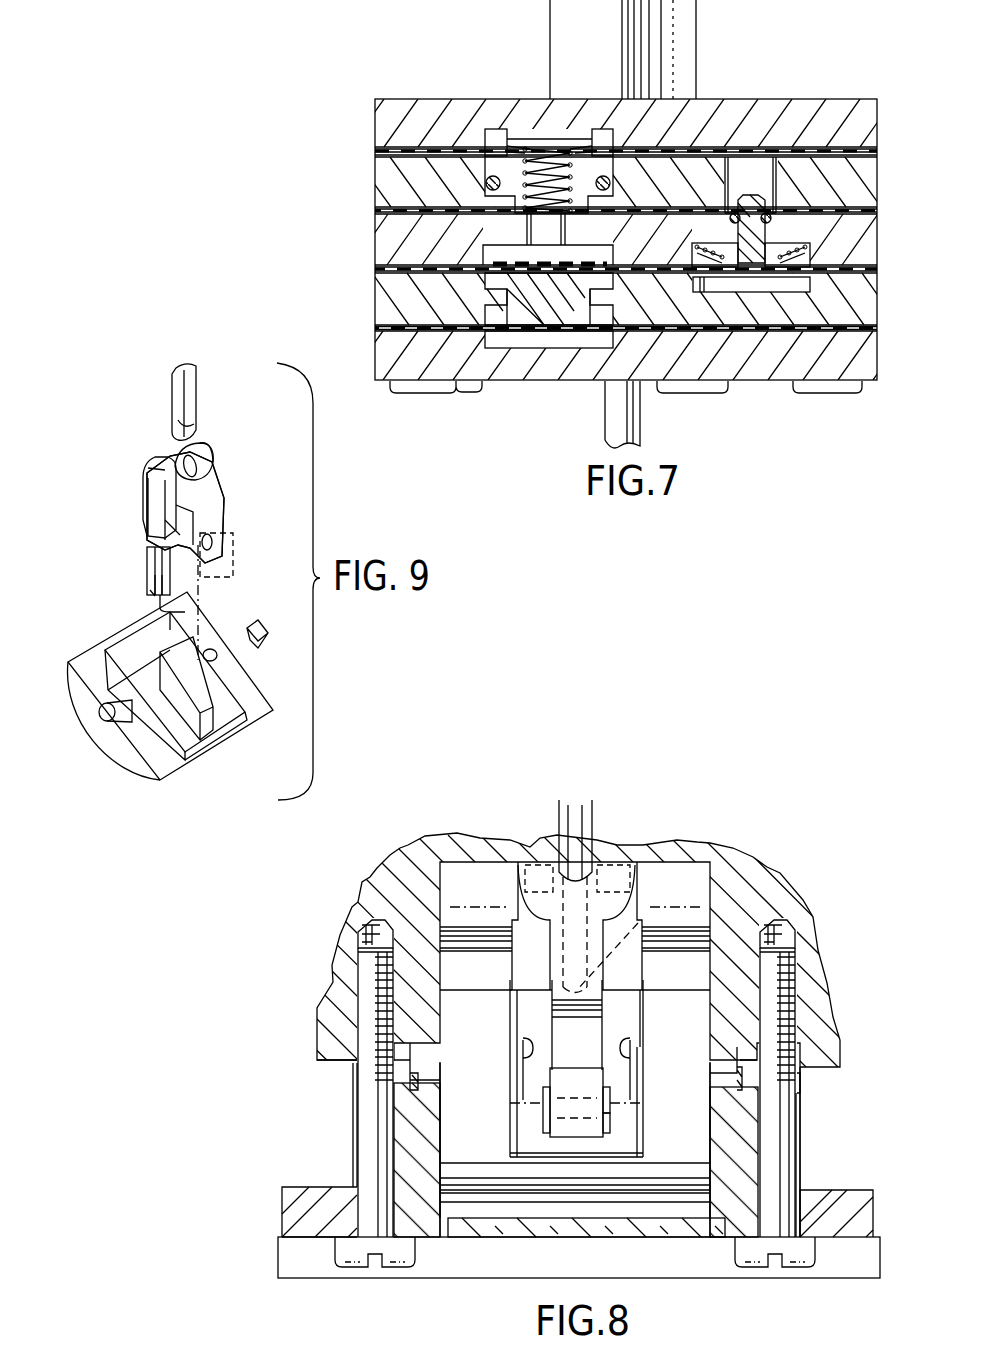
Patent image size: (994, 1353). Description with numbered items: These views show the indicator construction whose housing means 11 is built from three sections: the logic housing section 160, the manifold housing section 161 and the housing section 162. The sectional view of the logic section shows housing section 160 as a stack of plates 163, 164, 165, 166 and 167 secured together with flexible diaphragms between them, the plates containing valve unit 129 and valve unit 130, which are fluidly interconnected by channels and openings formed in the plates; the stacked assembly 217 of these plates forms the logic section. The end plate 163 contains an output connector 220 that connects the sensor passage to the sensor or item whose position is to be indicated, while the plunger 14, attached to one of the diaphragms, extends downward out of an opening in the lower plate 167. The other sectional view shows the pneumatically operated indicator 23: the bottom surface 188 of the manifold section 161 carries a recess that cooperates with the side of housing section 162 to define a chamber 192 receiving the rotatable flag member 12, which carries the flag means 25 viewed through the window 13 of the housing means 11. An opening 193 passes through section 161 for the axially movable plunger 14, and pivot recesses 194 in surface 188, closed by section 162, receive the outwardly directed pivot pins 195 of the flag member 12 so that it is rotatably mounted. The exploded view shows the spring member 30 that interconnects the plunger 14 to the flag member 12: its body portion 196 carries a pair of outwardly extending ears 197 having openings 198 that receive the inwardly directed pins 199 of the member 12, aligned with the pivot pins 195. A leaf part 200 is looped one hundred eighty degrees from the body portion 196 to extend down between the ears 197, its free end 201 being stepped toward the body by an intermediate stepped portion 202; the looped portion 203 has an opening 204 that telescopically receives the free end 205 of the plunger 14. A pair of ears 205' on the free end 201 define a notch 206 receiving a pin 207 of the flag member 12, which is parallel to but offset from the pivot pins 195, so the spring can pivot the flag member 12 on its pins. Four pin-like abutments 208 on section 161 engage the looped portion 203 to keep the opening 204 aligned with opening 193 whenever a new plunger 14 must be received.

In FIG. 8, the housing means 11 is at (785, 893).
In FIG. 9, the rotatable flag member 12 is at (130, 757).
In FIG. 8, the rotatable flag member 12 is at (455, 1128).
In FIG. 8, the window 13 is at (707, 1210).
In FIG. 7, the plunger 14 is at (636, 421).
In FIG. 9, the plunger 14 is at (173, 385).
In FIG. 8, the plunger 14 is at (566, 823).
In FIG. 8, the pneumatically operated indicator 23 is at (712, 1138).
In FIG. 8, the flag means 25 is at (537, 1192).
In FIG. 9, the spring member 30 is at (224, 460).
In FIG. 8, the spring member 30 is at (512, 979).
In FIG. 7, the valve unit 129 is at (582, 245).
In FIG. 7, the valve unit 130 is at (772, 238).
In FIG. 7, the housing section 160 is at (350, 206).
In FIG. 8, the manifold housing section 161 is at (842, 975).
In FIG. 8, the housing section 162 is at (817, 1130).
In FIG. 7, the end plate 163 is at (385, 118).
In FIG. 7, the plate 164 is at (388, 178).
In FIG. 7, the plate 165 is at (388, 240).
In FIG. 7, the plate 166 is at (388, 290).
In FIG. 7, the lower plate 167 is at (388, 343).
In FIG. 8, the bottom surface 188 is at (332, 1063).
In FIG. 8, the chamber 192 is at (707, 990).
In FIG. 8, the opening 193 is at (600, 857).
In FIG. 8, the pivot recesses 194 is at (430, 1033).
In FIG. 9, the pivot pins 195 is at (110, 708).
In FIG. 8, the pivot pins 195 is at (428, 1055).
In FIG. 9, the body portion 196 is at (153, 485).
In FIG. 8, the body portion 196 is at (523, 955).
In FIG. 9, the ears 197 is at (153, 530).
In FIG. 8, the ears 197 is at (528, 1005).
In FIG. 9, the openings 198 is at (212, 538).
In FIG. 9, the pins 199 is at (217, 657).
In FIG. 8, the pins 199 is at (525, 1040).
In FIG. 9, the leaf part 200 is at (190, 510).
In FIG. 8, the leaf part 200 is at (603, 993).
In FIG. 9, the free end 201 is at (177, 582).
In FIG. 8, the free end 201 is at (585, 1132).
In FIG. 9, the intermediate stepped portion 202 is at (167, 548).
In FIG. 8, the intermediate stepped portion 202 is at (610, 1007).
In FIG. 9, the looped portion 203 is at (193, 446).
In FIG. 8, the looped portion 203 is at (542, 840).
In FIG. 9, the opening 204 is at (207, 450).
In FIG. 8, the opening 204 is at (592, 835).
In FIG. 9, the free end of the plunger 205 is at (143, 436).
In FIG. 8, the free end of the plunger 205 is at (575, 949).
In FIG. 9, the ears 205' is at (105, 586).
In FIG. 8, the ears 205' is at (585, 1109).
In FIG. 9, the notch 206 is at (152, 603).
In FIG. 9, the pin 207 is at (113, 638).
In FIG. 8, the pin 207 is at (607, 1108).
In FIG. 8, the pin-like abutments 208 is at (523, 884).
In FIG. 7, the stack 217 is at (798, 96).
In FIG. 7, the output connector 220 is at (690, 38).